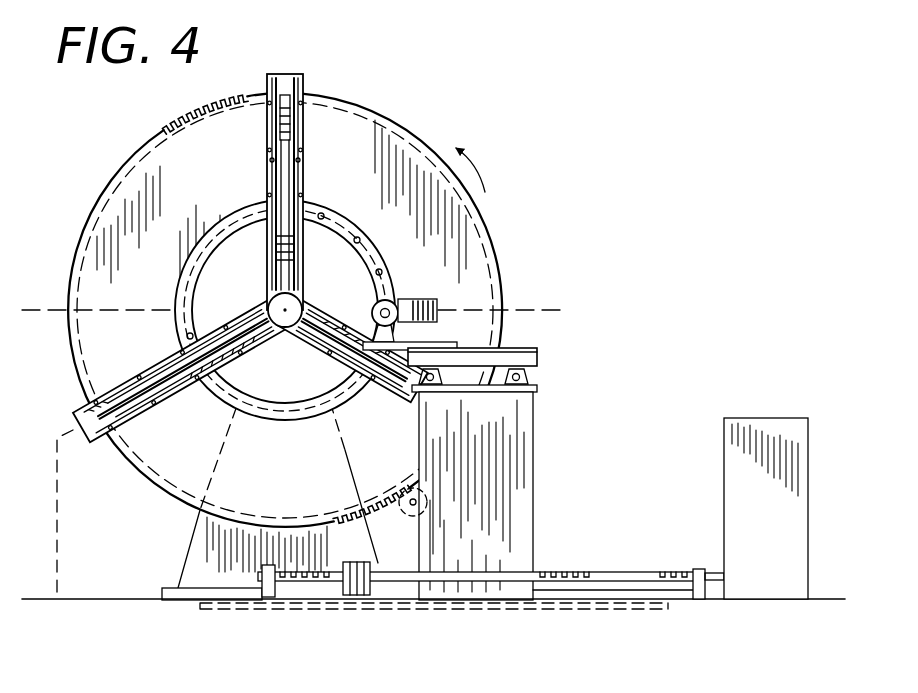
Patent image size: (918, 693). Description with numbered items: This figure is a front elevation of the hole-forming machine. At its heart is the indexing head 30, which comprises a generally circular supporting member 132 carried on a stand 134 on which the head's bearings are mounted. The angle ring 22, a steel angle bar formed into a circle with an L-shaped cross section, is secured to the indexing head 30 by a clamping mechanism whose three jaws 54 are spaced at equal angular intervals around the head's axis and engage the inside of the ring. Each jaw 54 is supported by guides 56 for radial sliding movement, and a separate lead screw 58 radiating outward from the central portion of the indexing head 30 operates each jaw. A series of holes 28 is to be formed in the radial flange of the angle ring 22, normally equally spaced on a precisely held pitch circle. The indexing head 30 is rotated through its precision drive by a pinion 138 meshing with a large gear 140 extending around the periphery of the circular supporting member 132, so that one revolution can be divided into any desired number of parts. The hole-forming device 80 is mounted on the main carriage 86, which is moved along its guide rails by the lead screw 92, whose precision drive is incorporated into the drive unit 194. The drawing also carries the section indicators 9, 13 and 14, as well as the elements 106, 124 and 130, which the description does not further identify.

The section line 9 is at (160, 378).
The section line 13 is at (262, 43).
The section line 14 is at (350, 299).
The angle ring 22 is at (341, 213).
The holes 28 is at (365, 252).
The indexing head 30 is at (412, 123).
The jaws 54 is at (212, 335).
The guides 56 is at (285, 135).
The lead screw 58 is at (291, 158).
The hole-forming device 80 is at (418, 295).
The main carriage 86 is at (533, 510).
The lead screw 92 is at (612, 572).
The base support 106 is at (540, 388).
The platform beam 124 is at (540, 352).
The drum rim 130 is at (93, 150).
The circular supporting member 132 is at (455, 224).
The stand 134 is at (200, 528).
The pinion 138 is at (410, 506).
The large gear 140 is at (207, 110).
The drive unit 194 is at (786, 519).